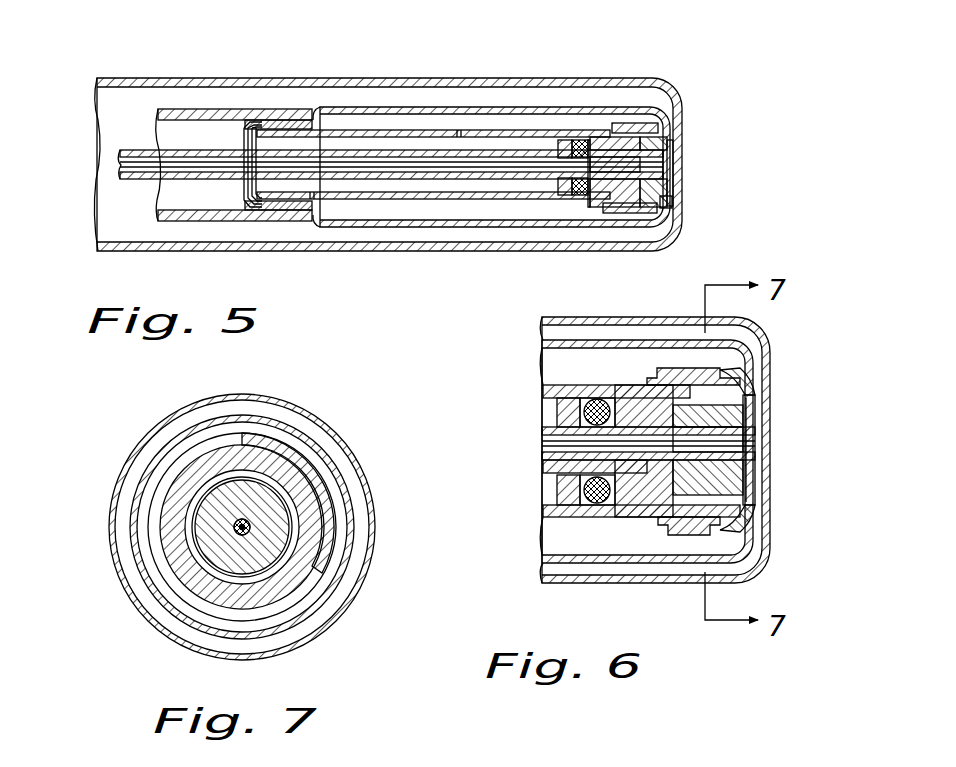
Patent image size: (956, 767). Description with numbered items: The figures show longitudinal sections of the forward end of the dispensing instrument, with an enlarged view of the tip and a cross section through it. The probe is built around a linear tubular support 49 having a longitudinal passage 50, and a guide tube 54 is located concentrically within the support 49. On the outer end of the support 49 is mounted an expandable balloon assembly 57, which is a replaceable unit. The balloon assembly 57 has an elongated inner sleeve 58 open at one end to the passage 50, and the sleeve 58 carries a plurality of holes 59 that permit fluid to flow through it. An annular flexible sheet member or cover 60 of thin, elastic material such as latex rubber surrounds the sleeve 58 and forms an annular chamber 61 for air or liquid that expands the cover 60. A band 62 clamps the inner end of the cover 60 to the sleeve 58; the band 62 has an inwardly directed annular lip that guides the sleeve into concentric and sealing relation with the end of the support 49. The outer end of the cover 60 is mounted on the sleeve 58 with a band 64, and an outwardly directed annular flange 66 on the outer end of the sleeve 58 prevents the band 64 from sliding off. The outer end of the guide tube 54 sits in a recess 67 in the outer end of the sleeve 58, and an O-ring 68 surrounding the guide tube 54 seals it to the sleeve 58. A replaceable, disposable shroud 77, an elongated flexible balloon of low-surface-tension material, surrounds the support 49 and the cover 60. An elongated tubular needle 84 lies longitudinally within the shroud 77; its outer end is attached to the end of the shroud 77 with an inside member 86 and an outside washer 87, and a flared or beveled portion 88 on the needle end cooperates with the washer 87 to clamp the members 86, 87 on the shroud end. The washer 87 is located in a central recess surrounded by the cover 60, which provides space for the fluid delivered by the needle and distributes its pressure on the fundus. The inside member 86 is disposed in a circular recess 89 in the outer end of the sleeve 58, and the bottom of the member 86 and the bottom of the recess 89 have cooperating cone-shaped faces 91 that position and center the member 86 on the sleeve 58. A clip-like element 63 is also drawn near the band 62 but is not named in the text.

In FIG. 5, the tubular support 49 is at (185, 109).
In FIG. 5, the longitudinal passage 50 is at (172, 133).
In FIG. 6, the longitudinal passage 50 is at (565, 490).
In FIG. 5, the guide tube 54 is at (135, 177).
In FIG. 6, the guide tube 54 is at (545, 430).
In FIG. 5, the expandable balloon assembly 57 is at (515, 102).
In FIG. 6, the expandable balloon assembly 57 is at (540, 355).
In FIG. 7, the expandable balloon assembly 57 is at (300, 430).
In FIG. 5, the inner sleeve 58 is at (375, 130).
In FIG. 6, the inner sleeve 58 is at (555, 391).
In FIG. 7, the inner sleeve 58 is at (300, 542).
In FIG. 5, the holes 59 is at (461, 130).
In FIG. 5, the cover 60 is at (568, 108).
In FIG. 6, the cover 60 is at (586, 340).
In FIG. 7, the cover 60 is at (352, 525).
In FIG. 5, the annular chamber 61 is at (588, 116).
In FIG. 6, the annular chamber 61 is at (612, 385).
In FIG. 7, the annular chamber 61 is at (295, 604).
In FIG. 5, the band 62 is at (283, 120).
In FIG. 5, the retaining clip 63 is at (250, 122).
In FIG. 5, the band 64 is at (636, 128).
In FIG. 6, the band 64 is at (686, 368).
In FIG. 7, the band 64 is at (310, 482).
In FIG. 5, the annular flange 66 is at (673, 200).
In FIG. 6, the annular flange 66 is at (740, 380).
In FIG. 5, the recess 67 is at (592, 190).
In FIG. 6, the recess 67 is at (635, 517).
In FIG. 5, the O-ring 68 is at (575, 192).
In FIG. 6, the O-ring 68 is at (597, 500).
In FIG. 5, the shroud 77 is at (160, 76).
In FIG. 6, the shroud 77 is at (545, 583).
In FIG. 7, the shroud 77 is at (160, 645).
In FIG. 5, the tubular needle 84 is at (237, 166).
In FIG. 6, the tubular needle 84 is at (548, 463).
In FIG. 7, the tubular needle 84 is at (236, 527).
In FIG. 5, the inside member 86 is at (668, 145).
In FIG. 6, the inside member 86 is at (752, 480).
In FIG. 7, the inside member 86 is at (217, 538).
In FIG. 5, the outside washer 87 is at (675, 151).
In FIG. 6, the outside washer 87 is at (757, 426).
In FIG. 6, the flared portion 88 is at (757, 452).
In FIG. 6, the circular recess 89 is at (748, 520).
In FIG. 7, the circular recess 89 is at (185, 574).
In FIG. 6, the cone-shaped faces 91 is at (672, 505).